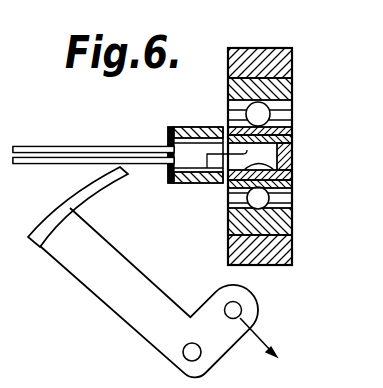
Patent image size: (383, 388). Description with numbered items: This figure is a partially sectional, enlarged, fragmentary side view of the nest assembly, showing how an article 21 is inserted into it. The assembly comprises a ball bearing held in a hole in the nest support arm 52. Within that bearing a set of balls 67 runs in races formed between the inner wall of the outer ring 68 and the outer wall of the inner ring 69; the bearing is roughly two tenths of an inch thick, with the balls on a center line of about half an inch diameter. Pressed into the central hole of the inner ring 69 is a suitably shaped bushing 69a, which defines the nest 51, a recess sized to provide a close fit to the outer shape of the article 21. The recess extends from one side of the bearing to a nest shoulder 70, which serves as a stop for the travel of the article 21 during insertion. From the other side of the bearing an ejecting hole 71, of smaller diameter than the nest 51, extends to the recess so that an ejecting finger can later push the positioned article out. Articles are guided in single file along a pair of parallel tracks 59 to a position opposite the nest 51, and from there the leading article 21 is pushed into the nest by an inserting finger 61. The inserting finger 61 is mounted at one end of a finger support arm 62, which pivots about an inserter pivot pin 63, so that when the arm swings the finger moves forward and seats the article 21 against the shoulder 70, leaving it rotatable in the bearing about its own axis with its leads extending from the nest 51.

The article 21 is at (204, 127).
The nest 51 is at (220, 181).
The nest support arm 52 is at (293, 58).
The parallel tracks 59 is at (177, 127).
The inserting finger 61 is at (72, 193).
The finger support arm 62 is at (127, 269).
The inserter pivot pin 63 is at (188, 351).
The balls 67 is at (258, 115).
The outer ring 68 is at (293, 92).
The inner ring 69 is at (292, 181).
The bushing 69a is at (293, 141).
The nest shoulder 70 is at (208, 180).
The ejecting hole 71 is at (283, 153).